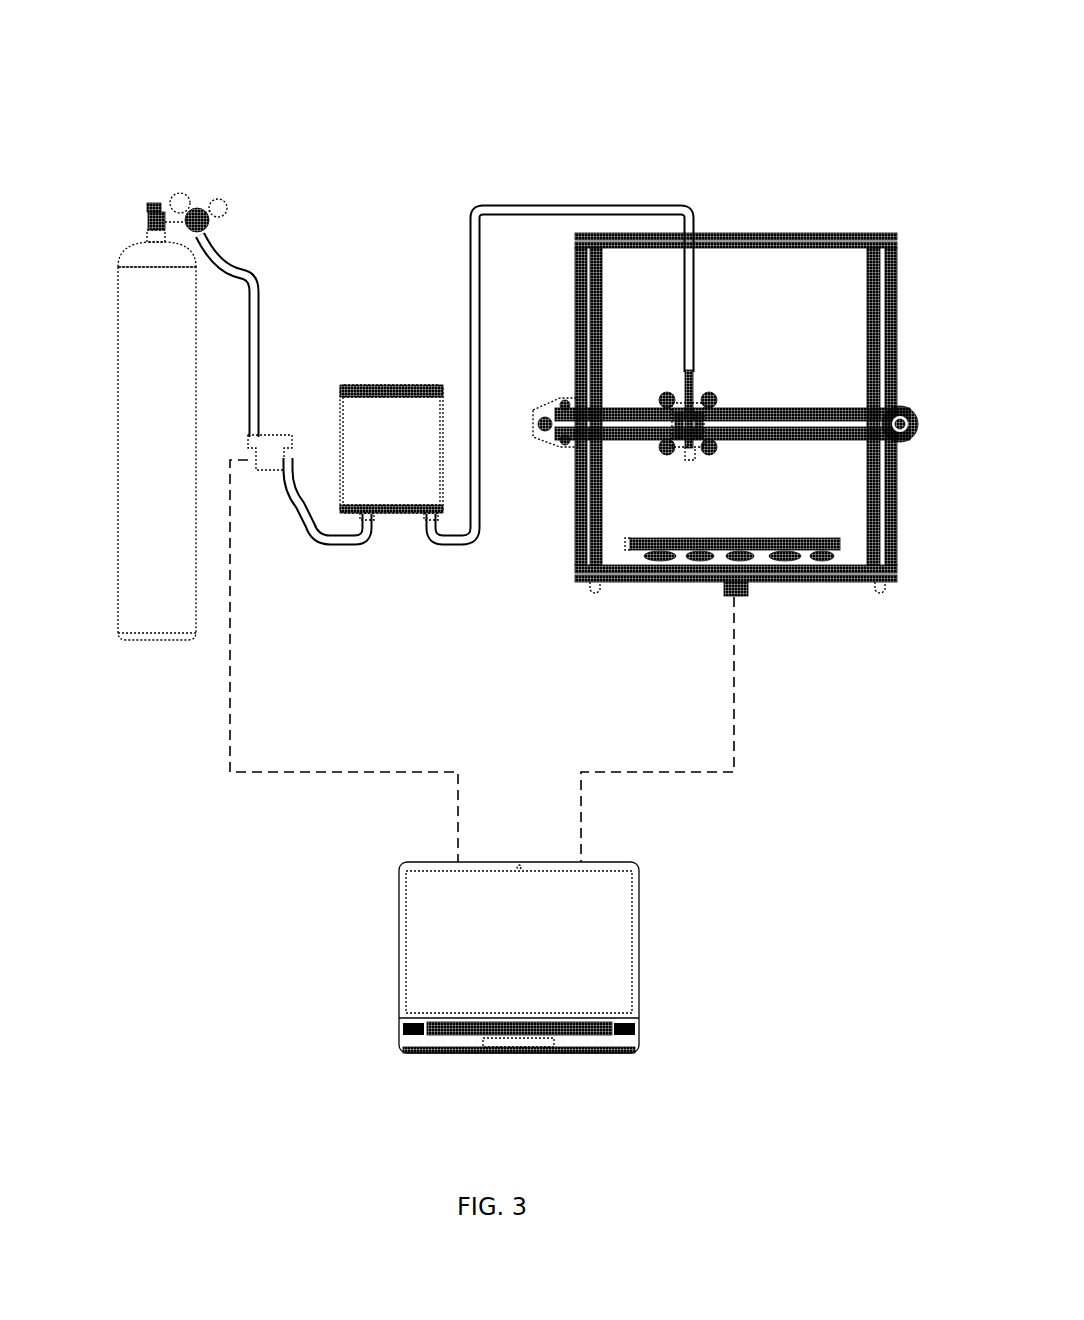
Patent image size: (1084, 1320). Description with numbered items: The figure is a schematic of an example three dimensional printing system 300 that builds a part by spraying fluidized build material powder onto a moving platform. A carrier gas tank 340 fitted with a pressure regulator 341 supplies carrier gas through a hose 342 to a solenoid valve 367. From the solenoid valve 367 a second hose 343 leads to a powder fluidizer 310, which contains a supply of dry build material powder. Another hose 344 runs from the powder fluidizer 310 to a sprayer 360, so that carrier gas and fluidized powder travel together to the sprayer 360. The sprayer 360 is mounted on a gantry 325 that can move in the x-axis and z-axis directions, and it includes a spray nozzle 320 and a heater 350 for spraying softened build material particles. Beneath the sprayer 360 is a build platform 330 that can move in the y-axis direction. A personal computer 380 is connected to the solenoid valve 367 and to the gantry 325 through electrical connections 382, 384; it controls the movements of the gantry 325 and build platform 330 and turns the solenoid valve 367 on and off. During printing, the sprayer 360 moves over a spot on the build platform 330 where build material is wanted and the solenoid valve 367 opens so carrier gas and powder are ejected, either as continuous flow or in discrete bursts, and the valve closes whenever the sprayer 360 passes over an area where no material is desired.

The three dimensional printing system 300 is at (158, 58).
The powder fluidizer 310 is at (407, 387).
The spray nozzle 320 is at (690, 462).
The gantry 325 is at (910, 428).
The build platform 330 is at (770, 530).
The carrier gas tank 340 is at (132, 325).
The pressure regulator 341 is at (222, 196).
The hose 342 is at (253, 278).
The second hose 343 is at (287, 490).
The hose 344 is at (473, 540).
The heater 350 is at (695, 457).
The sprayer 360 is at (690, 387).
The solenoid valve 367 is at (271, 440).
The personal computer 380 is at (640, 930).
The electrical connection 382 is at (285, 772).
The electrical connection 384 is at (734, 717).